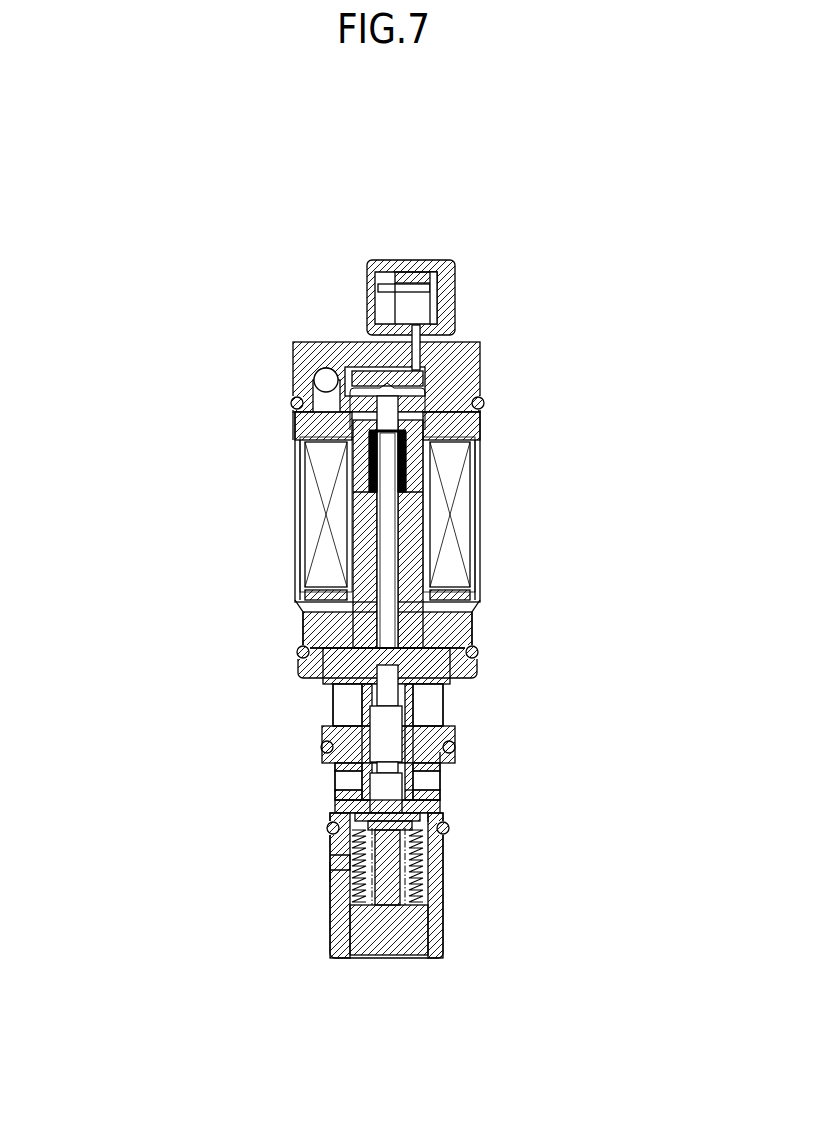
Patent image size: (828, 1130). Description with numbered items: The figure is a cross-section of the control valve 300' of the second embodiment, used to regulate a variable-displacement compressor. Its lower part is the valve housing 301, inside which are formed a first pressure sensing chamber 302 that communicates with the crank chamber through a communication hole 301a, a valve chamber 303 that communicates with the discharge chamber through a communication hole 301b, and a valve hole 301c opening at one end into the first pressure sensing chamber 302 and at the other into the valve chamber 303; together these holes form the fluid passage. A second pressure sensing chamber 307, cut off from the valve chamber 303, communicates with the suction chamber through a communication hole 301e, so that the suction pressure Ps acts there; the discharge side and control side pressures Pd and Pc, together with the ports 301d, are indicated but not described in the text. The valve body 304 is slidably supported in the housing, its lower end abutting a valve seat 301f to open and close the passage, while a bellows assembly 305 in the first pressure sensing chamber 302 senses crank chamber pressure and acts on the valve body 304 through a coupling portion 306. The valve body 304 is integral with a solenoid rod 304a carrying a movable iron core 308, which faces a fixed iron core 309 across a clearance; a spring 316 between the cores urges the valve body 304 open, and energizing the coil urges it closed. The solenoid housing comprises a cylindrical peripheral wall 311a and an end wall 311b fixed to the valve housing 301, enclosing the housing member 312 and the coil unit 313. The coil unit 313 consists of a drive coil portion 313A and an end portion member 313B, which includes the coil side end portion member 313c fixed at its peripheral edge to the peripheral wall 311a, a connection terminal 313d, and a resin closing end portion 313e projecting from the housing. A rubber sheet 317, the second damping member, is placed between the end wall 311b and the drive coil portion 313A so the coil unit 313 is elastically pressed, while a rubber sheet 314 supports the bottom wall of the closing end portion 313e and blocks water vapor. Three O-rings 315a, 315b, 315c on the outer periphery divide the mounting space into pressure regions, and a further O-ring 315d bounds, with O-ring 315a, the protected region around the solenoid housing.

The control valve 300' is at (369, 573).
The coil unit 313 is at (557, 322).
The end portion member 313B is at (172, 415).
The connection terminal 313d is at (380, 292).
The closing end portion 313e is at (313, 378).
The coil side end portion member 313c is at (292, 428).
The drive coil portion 313A is at (312, 475).
The housing member 312 is at (478, 356).
The rubber sheet 314 is at (337, 358).
The O-ring 315d is at (481, 400).
The peripheral wall 311a is at (292, 597).
The end wall 311b is at (297, 668).
The rubber sheet 317 is at (462, 598).
The fixed iron core 309 is at (362, 565).
The spring 316 is at (406, 496).
The movable iron core 308 is at (362, 479).
The solenoid rod 304a is at (385, 545).
The O-ring 315a is at (480, 652).
The second pressure sensing chamber 307 is at (420, 694).
The valve body 304 is at (355, 758).
The pressure of the suction chamber Ps is at (330, 707).
The communication hole 301e is at (428, 715).
The O-ring 315b is at (453, 745).
The port 301d is at (440, 758).
The discharge pressure port Pd is at (332, 778).
The valve seat 301f is at (355, 775).
The valve chamber 303 is at (415, 775).
The valve housing 301 is at (327, 813).
The communication hole 301a is at (333, 862).
The communication hole 301b is at (420, 797).
The valve hole 301c is at (446, 820).
The O-ring 315c is at (449, 832).
The control pressure port Pc is at (330, 872).
The first pressure sensing chamber 302 is at (445, 915).
The coupling portion 306 is at (422, 814).
The bellows assembly 305 is at (360, 897).